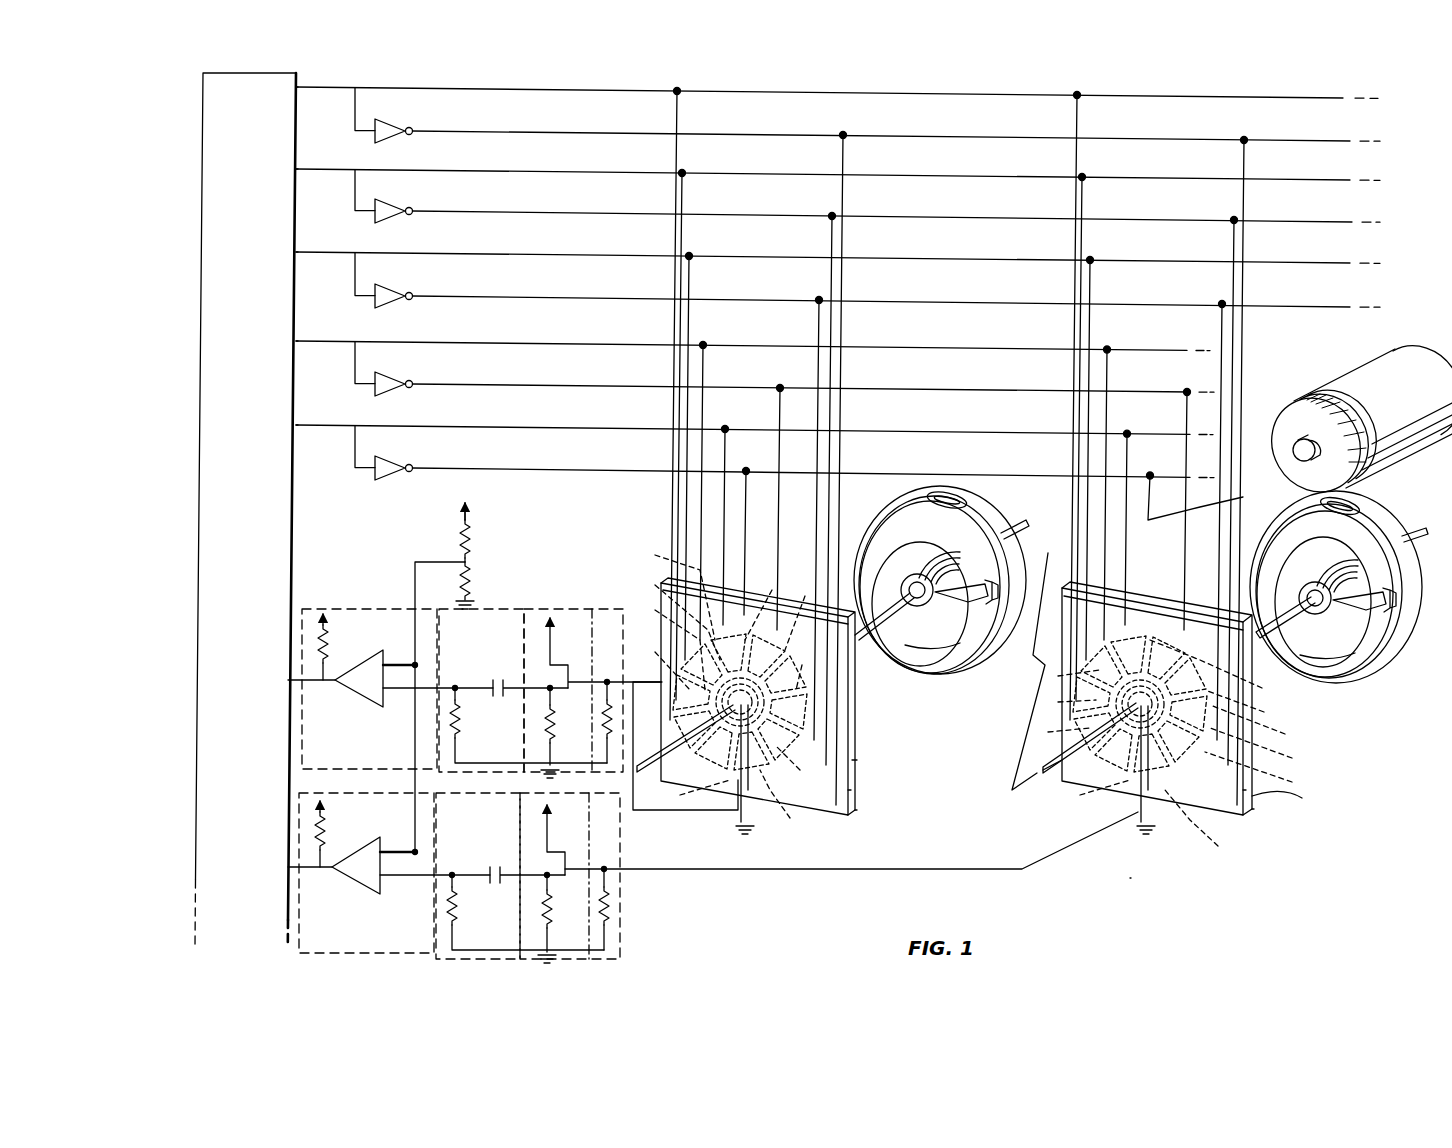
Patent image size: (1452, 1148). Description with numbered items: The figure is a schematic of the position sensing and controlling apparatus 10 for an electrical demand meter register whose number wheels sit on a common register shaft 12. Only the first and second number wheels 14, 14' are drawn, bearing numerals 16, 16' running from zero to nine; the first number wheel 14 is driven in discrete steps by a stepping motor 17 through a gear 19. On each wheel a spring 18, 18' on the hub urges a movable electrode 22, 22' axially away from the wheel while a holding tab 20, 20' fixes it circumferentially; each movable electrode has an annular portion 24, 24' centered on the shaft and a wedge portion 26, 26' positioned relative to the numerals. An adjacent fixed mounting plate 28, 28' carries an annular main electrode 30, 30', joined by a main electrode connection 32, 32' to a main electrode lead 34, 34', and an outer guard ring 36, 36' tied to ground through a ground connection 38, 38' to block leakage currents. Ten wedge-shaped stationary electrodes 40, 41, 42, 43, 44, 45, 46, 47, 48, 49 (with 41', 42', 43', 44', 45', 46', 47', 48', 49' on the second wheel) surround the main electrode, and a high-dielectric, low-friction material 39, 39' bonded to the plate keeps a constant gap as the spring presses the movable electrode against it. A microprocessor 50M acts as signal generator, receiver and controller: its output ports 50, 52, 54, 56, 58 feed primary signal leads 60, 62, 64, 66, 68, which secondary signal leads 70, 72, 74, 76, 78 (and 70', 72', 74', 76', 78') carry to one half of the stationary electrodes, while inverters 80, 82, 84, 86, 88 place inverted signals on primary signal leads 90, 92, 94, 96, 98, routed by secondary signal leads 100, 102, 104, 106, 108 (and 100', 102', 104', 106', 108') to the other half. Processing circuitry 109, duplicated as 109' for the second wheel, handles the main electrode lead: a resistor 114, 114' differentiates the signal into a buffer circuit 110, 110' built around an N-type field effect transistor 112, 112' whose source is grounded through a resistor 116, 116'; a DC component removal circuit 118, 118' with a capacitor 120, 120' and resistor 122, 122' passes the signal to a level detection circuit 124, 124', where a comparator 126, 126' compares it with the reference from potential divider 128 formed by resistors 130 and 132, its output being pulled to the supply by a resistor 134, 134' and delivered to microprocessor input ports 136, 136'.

The position sensing and controlling apparatus 10 is at (1130, 878).
The register shaft 12 is at (1075, 682).
The first number wheel 14 is at (1336, 582).
The second number wheel 14' is at (940, 575).
The numerals 16 is at (1407, 610).
The numerals 16' is at (1025, 539).
The stepping motor 17 is at (1353, 427).
The spring 18 is at (1323, 597).
The spring 18' is at (920, 592).
The gear 19 is at (1300, 437).
The holding tab 20 is at (1364, 652).
The holding tab 20' is at (972, 637).
The movable electrode 22 is at (1329, 700).
The movable electrode 22' is at (913, 661).
The annular portion 24 is at (1318, 582).
The annular portion 24' is at (921, 573).
The wedge portion 26 is at (1299, 622).
The wedge portion 26' is at (796, 682).
The fixed mounting plate 28 is at (1272, 819).
The fixed mounting plate 28' is at (870, 823).
The main electrode 30 is at (1221, 786).
The main electrode 30' is at (869, 788).
The main electrode connection 32 is at (1163, 783).
The main electrode connection 32' is at (721, 770).
The main electrode lead 34 is at (851, 855).
The main electrode lead 34' is at (685, 764).
The guard ring 36 is at (1156, 698).
The guard ring 36' is at (764, 696).
The ground connection 38 is at (1105, 803).
The ground connection 38' is at (699, 793).
The high dielectric, low coefficient of friction material 39 is at (1294, 803).
The high dielectric, low coefficient of friction material 39' is at (895, 766).
The stationary electrode 40 is at (1065, 780).
The stationary electrode 41 is at (1058, 731).
The stationary electrode 41' is at (659, 664).
The stationary electrode 42 is at (1065, 701).
The stationary electrode 42' is at (666, 642).
The stationary electrode 43 is at (1067, 673).
The stationary electrode 43' is at (674, 613).
The stationary electrode 44 is at (1219, 671).
The stationary electrode 44' is at (671, 588).
The stationary electrode 45 is at (1248, 707).
The stationary electrode 45' is at (764, 601).
The stationary electrode 46 is at (1261, 726).
The stationary electrode 46' is at (801, 611).
The stationary electrode 47 is at (1265, 749).
The stationary electrode 47' is at (808, 668).
The stationary electrode 48 is at (1262, 773).
The stationary electrode 48' is at (802, 766).
The stationary electrode 49 is at (1204, 825).
The stationary electrode 49' is at (789, 802).
The output port 50 is at (300, 88).
The microprocessor 50M is at (245, 509).
The output port 52 is at (300, 169).
The output port 54 is at (298, 253).
The output port 56 is at (298, 341).
The output port 58 is at (298, 425).
The primary signal lead 60 is at (606, 88).
The primary signal lead 62 is at (612, 170).
The primary signal lead 64 is at (610, 252).
The primary signal lead 66 is at (602, 342).
The primary signal lead 68 is at (582, 408).
The secondary signal lead 70 is at (1092, 406).
The secondary signal lead 70' is at (695, 404).
The secondary signal lead 72 is at (1099, 437).
The secondary signal lead 72' is at (702, 435).
The secondary signal lead 74 is at (1107, 459).
The secondary signal lead 74' is at (708, 457).
The secondary signal lead 76 is at (1123, 493).
The secondary signal lead 76' is at (722, 491).
The secondary signal lead 78 is at (1142, 527).
The secondary signal lead 78' is at (727, 513).
The inverter 80 is at (391, 120).
The inverter 82 is at (391, 203).
The inverter 84 is at (391, 286).
The inverter 86 is at (391, 374).
The inverter 88 is at (391, 459).
The primary signal lead 90 is at (614, 131).
The primary signal lead 92 is at (617, 212).
The primary signal lead 94 is at (617, 297).
The primary signal lead 96 is at (609, 384).
The primary signal lead 98 is at (569, 453).
The secondary signal lead 100 is at (1219, 471).
The secondary signal lead 100' is at (818, 469).
The secondary signal lead 102 is at (1210, 491).
The secondary signal lead 102' is at (807, 489).
The secondary signal lead 104 is at (1195, 521).
The secondary signal lead 104' is at (794, 519).
The secondary signal lead 106 is at (1168, 510).
The secondary signal lead 106' is at (779, 496).
The secondary signal lead 108 is at (1215, 496).
The secondary signal lead 108' is at (755, 525).
The processing circuitry 109 is at (442, 827).
The processing circuitry 109' is at (490, 620).
The buffer circuit 110 is at (573, 867).
The buffer circuit 110' is at (573, 676).
The N-type field effect transistor 112 is at (585, 838).
The N-type field effect transistor 112' is at (606, 651).
The resistor 114 is at (629, 909).
The resistor 114' is at (607, 722).
The resistor 116 is at (564, 918).
The resistor 116' is at (570, 732).
The DC component removal circuit 118 is at (478, 876).
The DC component removal circuit 118' is at (481, 690).
The capacitor 120 is at (516, 857).
The capacitor 120' is at (517, 669).
The resistor 122 is at (525, 912).
The resistor 122' is at (528, 725).
The level detection circuit 124 is at (366, 873).
The level detection circuit 124' is at (383, 707).
The comparator 126 is at (356, 878).
The comparator 126' is at (357, 698).
The potential divider 128 is at (508, 547).
The resistor 130 is at (471, 522).
The resistor 132 is at (471, 573).
The resistor 134 is at (342, 834).
The resistor 134' is at (352, 647).
The input port 136 is at (284, 868).
The input port 136' is at (285, 681).